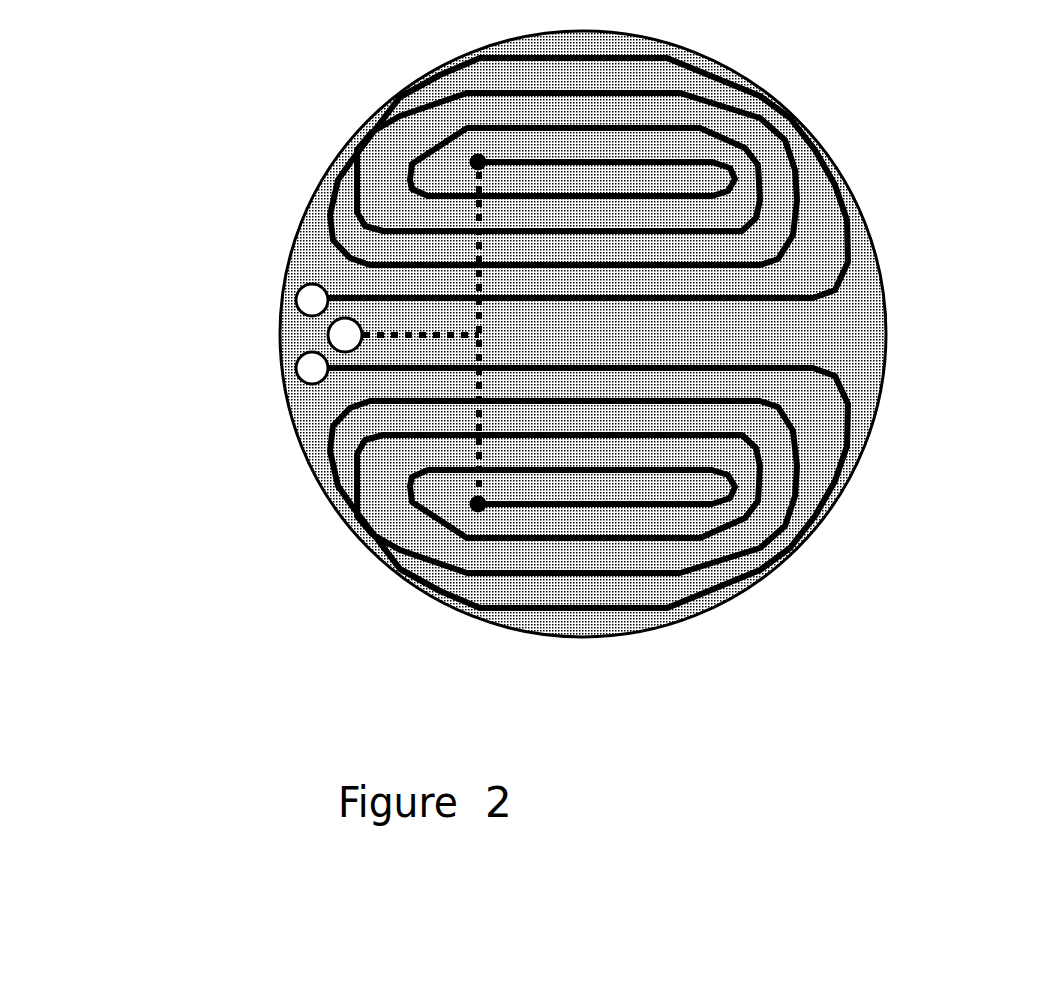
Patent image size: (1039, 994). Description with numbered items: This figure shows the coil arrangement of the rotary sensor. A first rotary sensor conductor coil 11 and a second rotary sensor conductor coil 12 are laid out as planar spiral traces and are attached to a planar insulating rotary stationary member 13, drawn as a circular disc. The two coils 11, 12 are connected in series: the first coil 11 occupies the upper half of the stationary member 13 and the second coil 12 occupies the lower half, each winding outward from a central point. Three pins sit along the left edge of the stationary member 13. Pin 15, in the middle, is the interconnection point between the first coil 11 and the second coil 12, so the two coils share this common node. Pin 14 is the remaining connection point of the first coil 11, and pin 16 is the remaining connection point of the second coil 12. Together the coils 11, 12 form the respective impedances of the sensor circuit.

The first rotary sensor conductor coil 11 is at (653, 178).
The second rotary sensor conductor coil 12 is at (663, 488).
The planar insulating rotary stationary member 13 is at (887, 313).
The pin 14 is at (294, 300).
The pin 15 is at (326, 335).
The pin 16 is at (294, 369).